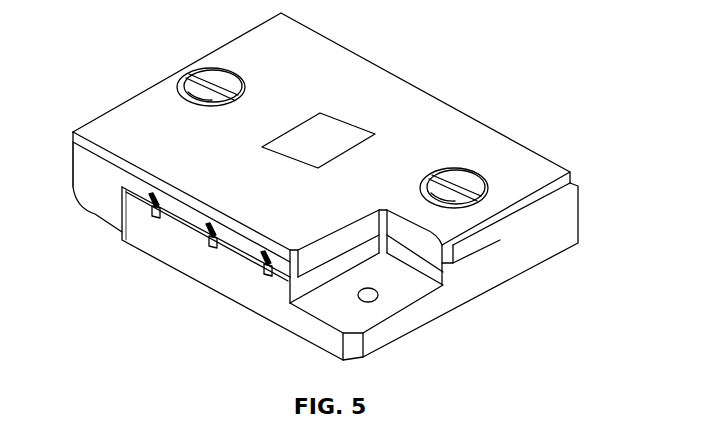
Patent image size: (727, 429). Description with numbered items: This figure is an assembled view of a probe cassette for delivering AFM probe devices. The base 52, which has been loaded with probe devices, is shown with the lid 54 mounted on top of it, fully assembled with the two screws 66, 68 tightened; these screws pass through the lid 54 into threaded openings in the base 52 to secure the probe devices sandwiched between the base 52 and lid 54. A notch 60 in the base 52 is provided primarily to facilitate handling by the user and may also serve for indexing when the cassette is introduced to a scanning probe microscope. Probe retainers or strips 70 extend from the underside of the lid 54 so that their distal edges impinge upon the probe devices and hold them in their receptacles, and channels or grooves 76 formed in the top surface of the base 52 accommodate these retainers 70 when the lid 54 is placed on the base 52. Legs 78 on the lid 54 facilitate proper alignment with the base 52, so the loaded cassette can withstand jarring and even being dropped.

The base 52 is at (578, 218).
The lid 54 is at (367, 58).
The notch 60 is at (402, 297).
The screw 66 is at (204, 72).
The screw 68 is at (447, 172).
The probe retainers or strips 70 is at (148, 201).
The channels or grooves 76 is at (266, 276).
The legs 78 is at (88, 170).